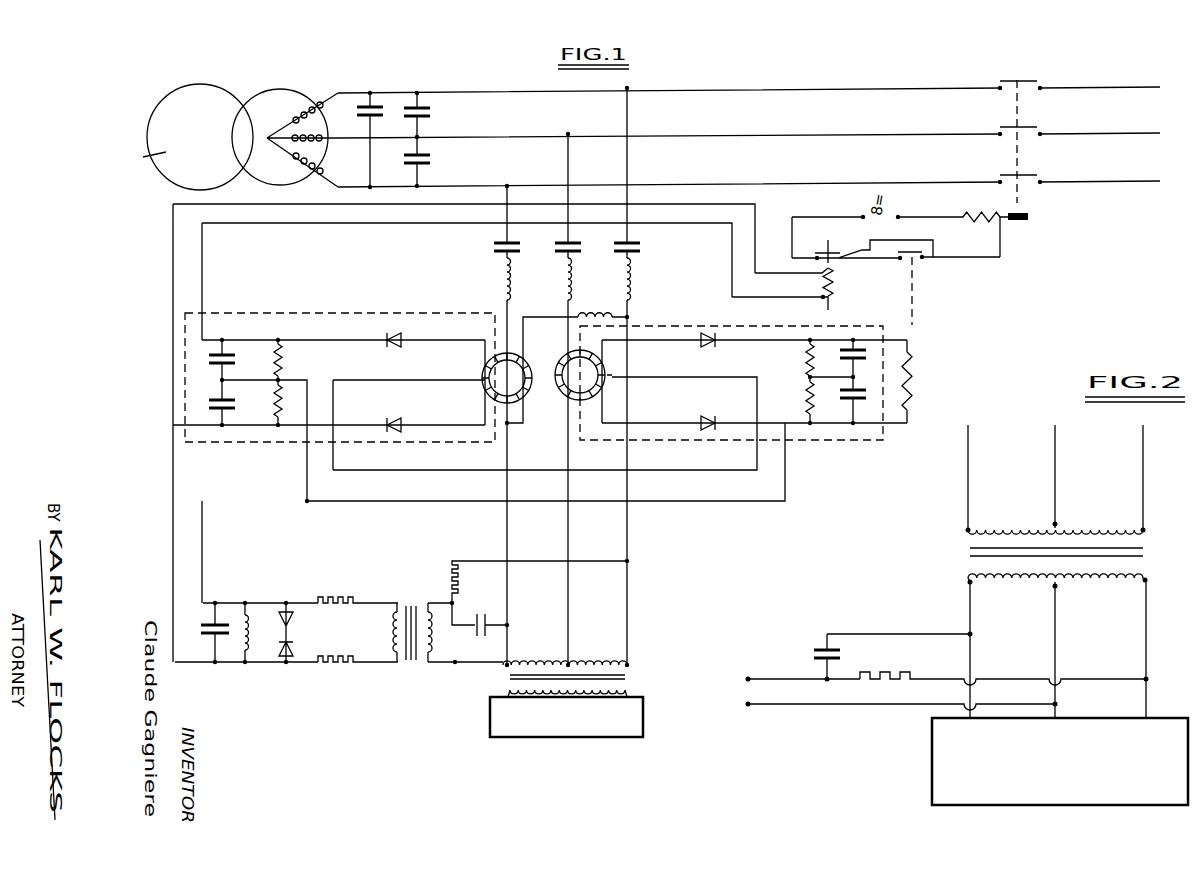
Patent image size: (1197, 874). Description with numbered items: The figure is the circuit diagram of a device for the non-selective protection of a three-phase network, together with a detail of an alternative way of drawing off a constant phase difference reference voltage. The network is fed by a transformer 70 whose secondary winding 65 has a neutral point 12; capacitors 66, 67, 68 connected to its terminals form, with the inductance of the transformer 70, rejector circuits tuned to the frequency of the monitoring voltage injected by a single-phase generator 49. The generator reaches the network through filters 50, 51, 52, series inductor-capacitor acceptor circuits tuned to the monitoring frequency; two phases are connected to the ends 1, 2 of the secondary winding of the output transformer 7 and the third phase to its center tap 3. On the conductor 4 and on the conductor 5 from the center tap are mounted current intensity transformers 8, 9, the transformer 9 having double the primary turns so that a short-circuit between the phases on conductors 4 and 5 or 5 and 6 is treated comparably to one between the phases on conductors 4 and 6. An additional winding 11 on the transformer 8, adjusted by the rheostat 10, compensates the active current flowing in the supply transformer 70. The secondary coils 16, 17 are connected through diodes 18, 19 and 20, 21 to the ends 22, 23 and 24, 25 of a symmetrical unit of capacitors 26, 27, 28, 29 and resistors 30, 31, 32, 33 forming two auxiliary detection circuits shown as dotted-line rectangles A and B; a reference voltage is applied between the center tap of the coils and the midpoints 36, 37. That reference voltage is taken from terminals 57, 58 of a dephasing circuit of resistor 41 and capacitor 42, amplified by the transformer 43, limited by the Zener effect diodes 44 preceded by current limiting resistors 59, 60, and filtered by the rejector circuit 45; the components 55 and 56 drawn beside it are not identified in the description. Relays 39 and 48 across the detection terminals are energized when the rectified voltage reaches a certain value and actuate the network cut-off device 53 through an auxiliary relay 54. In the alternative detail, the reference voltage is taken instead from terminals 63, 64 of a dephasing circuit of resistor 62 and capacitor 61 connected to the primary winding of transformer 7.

In FIG. 1, the end of secondary winding 1 is at (558, 670).
In FIG. 2, the end of secondary winding 1 is at (955, 479).
In FIG. 1, the end of secondary winding 2 is at (636, 668).
In FIG. 2, the end of secondary winding 2 is at (1150, 479).
In FIG. 1, the center tap 3 is at (574, 653).
In FIG. 2, the center tap 3 is at (1055, 479).
In FIG. 1, the conductor 4 is at (498, 482).
In FIG. 1, the conductor 5 is at (560, 482).
In FIG. 1, the conductor 6 is at (620, 482).
In FIG. 1, the output transformer 7 is at (633, 683).
In FIG. 2, the output transformer 7 is at (1065, 553).
In FIG. 1, the current intensity transformer 8 is at (520, 396).
In FIG. 1, the current intensity transformer 9 is at (553, 419).
In FIG. 1, the rheostat 10 is at (588, 325).
In FIG. 1, the additional winding 11 is at (536, 367).
In FIG. 1, the neutral point 12 is at (264, 150).
In FIG. 1, the secondary winding coil 16 is at (484, 388).
In FIG. 1, the secondary winding coil 17 is at (615, 350).
In FIG. 1, the diode 18 is at (402, 333).
In FIG. 1, the diode 19 is at (402, 418).
In FIG. 1, the diode 20 is at (699, 333).
In FIG. 1, the diode 21 is at (699, 416).
In FIG. 1, the end of detection unit 22 is at (343, 331).
In FIG. 1, the end of detection unit 23 is at (329, 434).
In FIG. 1, the end of detection unit 24 is at (754, 330).
In FIG. 1, the end of detection unit 25 is at (754, 432).
In FIG. 1, the capacitor 26 is at (211, 360).
In FIG. 1, the capacitor 27 is at (211, 402).
In FIG. 1, the capacitor 28 is at (862, 358).
In FIG. 1, the capacitor 29 is at (862, 400).
In FIG. 1, the resistor 30 is at (288, 360).
In FIG. 1, the resistor 31 is at (288, 402).
In FIG. 1, the resistor 32 is at (799, 358).
In FIG. 1, the resistor 33 is at (799, 400).
In FIG. 1, the midpoint 36 is at (352, 433).
In FIG. 1, the midpoint 37 is at (831, 368).
In FIG. 1, the relay 39 is at (794, 289).
In FIG. 1, the resistor 41 is at (528, 581).
In FIG. 1, the capacitor 42 is at (493, 619).
In FIG. 1, the transformer 43 is at (412, 646).
In FIG. 1, the Zener effect diodes 44 is at (296, 632).
In FIG. 1, the rejector circuit 45 is at (235, 632).
In FIG. 1, the relay 48 is at (917, 381).
In FIG. 1, the single-phase generator 49 is at (643, 718).
In FIG. 2, the single-phase generator 49 is at (1170, 722).
In FIG. 1, the filter 50 is at (497, 242).
In FIG. 1, the filter 51 is at (559, 216).
In FIG. 1, the filter 52 is at (619, 193).
In FIG. 1, the network cut-off device 53 is at (1019, 195).
In FIG. 1, the auxiliary relay 54 is at (963, 208).
In FIG. 1, the capacitor 55 is at (215, 624).
In FIG. 1, the terminal 56 is at (212, 679).
In FIG. 1, the terminal of dephasing circuit 57 is at (465, 607).
In FIG. 1, the terminal of dephasing circuit 58 is at (465, 674).
In FIG. 1, the current limiting resistor 59 is at (338, 592).
In FIG. 1, the current limiting resistor 60 is at (338, 673).
In FIG. 2, the capacitor 61 is at (812, 656).
In FIG. 2, the resistor 62 is at (884, 677).
In FIG. 2, the terminal 63 is at (930, 681).
In FIG. 2, the terminal 64 is at (885, 706).
In FIG. 1, the secondary winding 65 is at (744, 137).
In FIG. 1, the capacitor 66 is at (376, 140).
In FIG. 1, the capacitor 67 is at (425, 115).
In FIG. 1, the capacitor 68 is at (425, 163).
In FIG. 1, the network supply transformer 70 is at (176, 134).
In FIG. 1, the dotted-line rectangle A is at (190, 440).
In FIG. 1, the dotted-line rectangle B is at (868, 432).